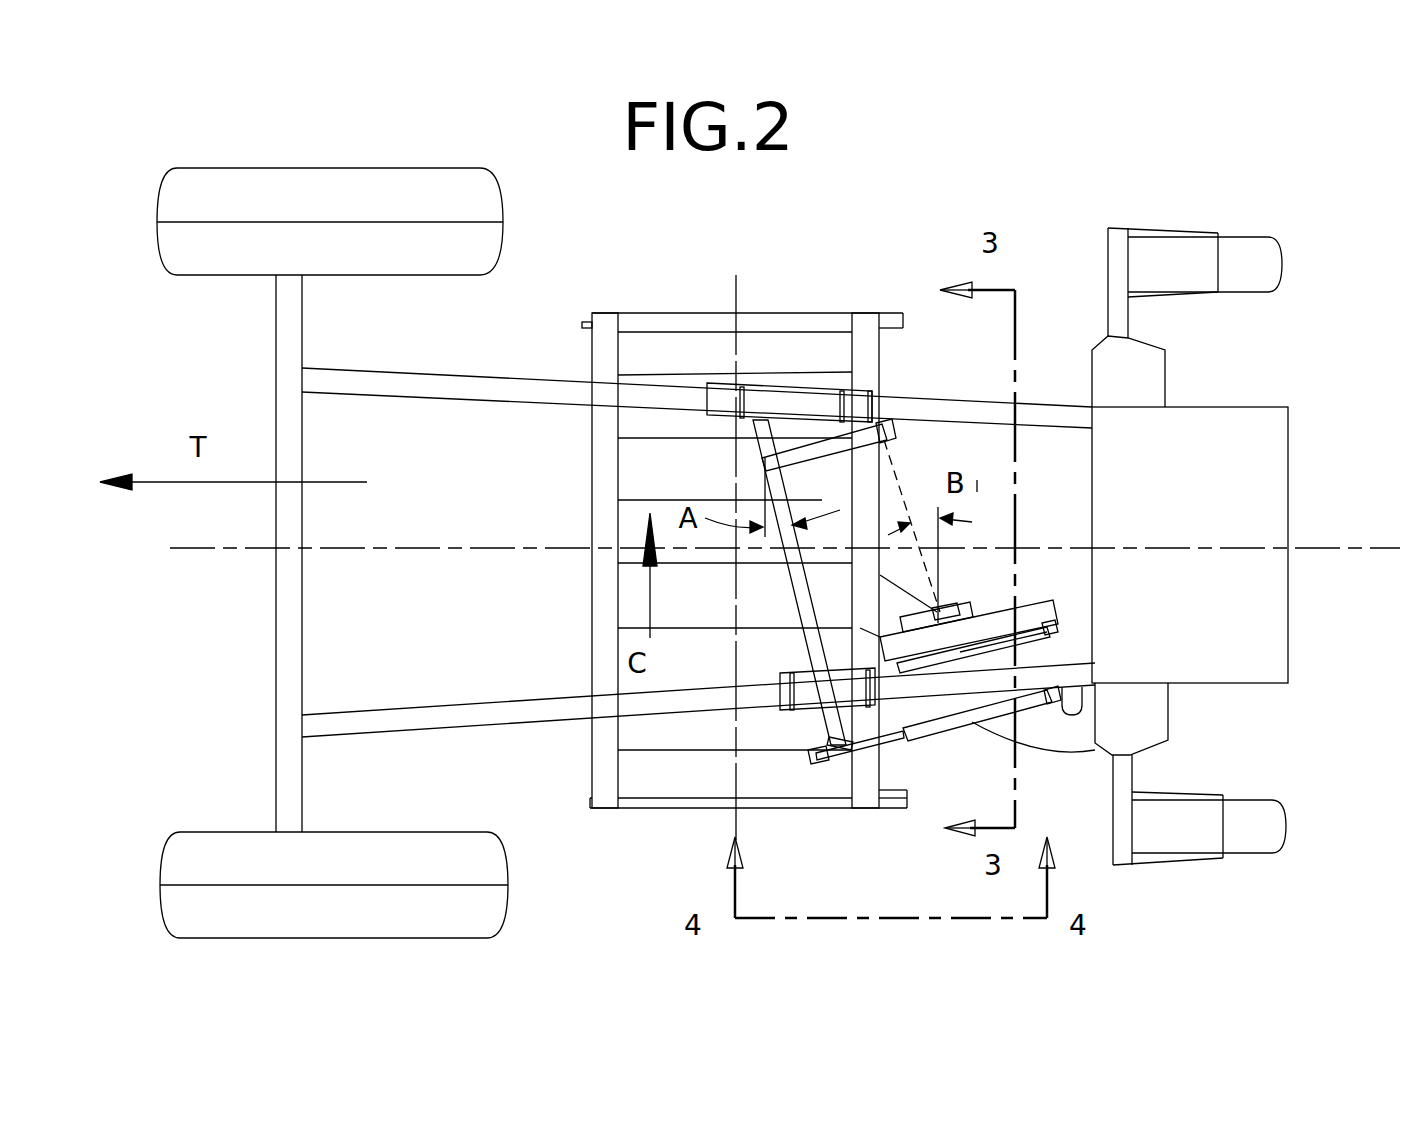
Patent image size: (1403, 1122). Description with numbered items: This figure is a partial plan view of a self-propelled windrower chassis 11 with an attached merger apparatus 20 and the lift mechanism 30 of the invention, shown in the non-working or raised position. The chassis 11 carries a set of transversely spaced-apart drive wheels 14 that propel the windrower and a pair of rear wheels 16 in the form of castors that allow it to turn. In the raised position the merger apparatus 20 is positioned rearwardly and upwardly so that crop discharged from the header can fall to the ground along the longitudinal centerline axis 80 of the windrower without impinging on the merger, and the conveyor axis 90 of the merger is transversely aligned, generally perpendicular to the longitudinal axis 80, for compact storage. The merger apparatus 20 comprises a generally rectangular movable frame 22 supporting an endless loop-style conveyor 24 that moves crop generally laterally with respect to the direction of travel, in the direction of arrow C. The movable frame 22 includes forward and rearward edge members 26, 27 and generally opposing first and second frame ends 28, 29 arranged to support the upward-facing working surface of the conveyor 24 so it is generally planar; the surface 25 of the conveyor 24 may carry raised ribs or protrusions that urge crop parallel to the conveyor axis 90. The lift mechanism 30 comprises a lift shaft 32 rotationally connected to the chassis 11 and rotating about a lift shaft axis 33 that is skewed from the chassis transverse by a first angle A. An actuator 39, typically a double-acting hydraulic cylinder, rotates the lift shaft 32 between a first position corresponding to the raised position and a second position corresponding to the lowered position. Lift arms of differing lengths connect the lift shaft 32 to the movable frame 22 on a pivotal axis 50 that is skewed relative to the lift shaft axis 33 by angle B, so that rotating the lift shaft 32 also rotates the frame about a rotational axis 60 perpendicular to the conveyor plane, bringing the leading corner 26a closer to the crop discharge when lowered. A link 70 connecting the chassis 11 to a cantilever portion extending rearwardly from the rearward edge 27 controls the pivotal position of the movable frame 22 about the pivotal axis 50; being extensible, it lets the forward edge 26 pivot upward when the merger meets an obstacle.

The chassis 11 is at (367, 382).
The drive wheels 14 is at (502, 216).
The rear wheels 16 is at (1277, 268).
The merger apparatus 20 is at (710, 521).
The movable frame 22 is at (602, 323).
The conveyor 24 is at (666, 330).
The surface of conveyor 25 is at (645, 458).
The forward edge member 26 is at (600, 607).
The leading corner 26a is at (590, 808).
The rearward edge member 27 is at (880, 356).
The first frame end 28 is at (782, 810).
The second frame end 29 is at (817, 317).
The lift mechanism 30 is at (949, 766).
The lift shaft 32 is at (825, 727).
The lift shaft axis 33 is at (807, 613).
The actuator 39 is at (1168, 743).
The pivotal axis 50 is at (938, 580).
The rotational axis 60 is at (731, 554).
The link 70 is at (1040, 636).
The longitudinal centerline axis 80 is at (1315, 545).
The conveyor axis 90 is at (737, 302).